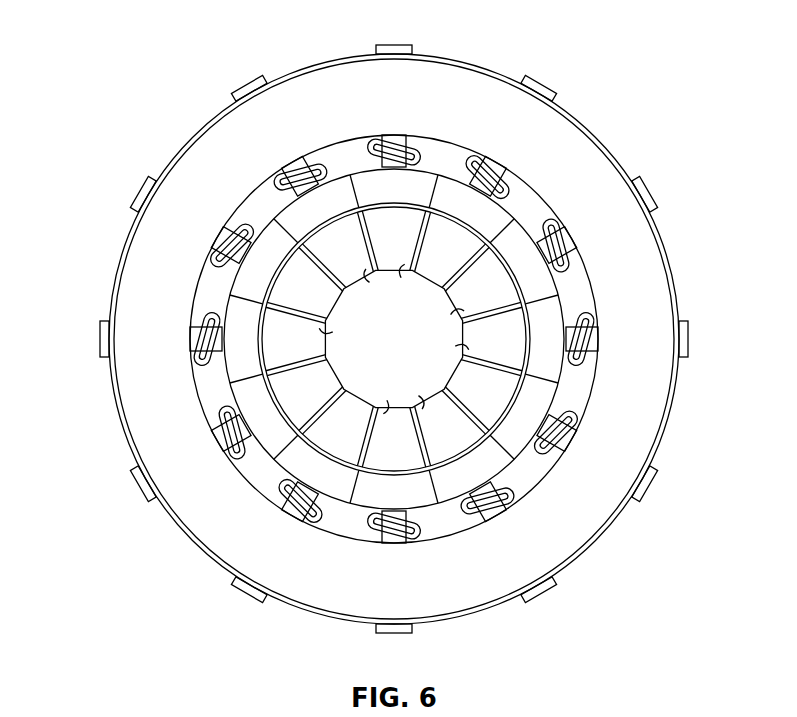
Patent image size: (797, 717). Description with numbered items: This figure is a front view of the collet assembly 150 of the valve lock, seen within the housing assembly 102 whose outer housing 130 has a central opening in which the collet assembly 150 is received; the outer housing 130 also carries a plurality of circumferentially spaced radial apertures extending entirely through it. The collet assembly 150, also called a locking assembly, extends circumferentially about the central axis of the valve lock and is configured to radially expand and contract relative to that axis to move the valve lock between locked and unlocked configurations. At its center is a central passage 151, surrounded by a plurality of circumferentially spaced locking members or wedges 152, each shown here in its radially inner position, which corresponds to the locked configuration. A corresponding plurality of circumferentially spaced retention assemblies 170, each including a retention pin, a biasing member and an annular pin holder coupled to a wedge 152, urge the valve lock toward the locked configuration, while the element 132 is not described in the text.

The collet assembly 150 is at (104, 60).
The housing assembly 102 is at (570, 146).
The outer housing 130 is at (405, 339).
The retention assemblies 170 is at (393, 46).
The clip ring 132 is at (462, 153).
The central passage 151 is at (347, 317).
The wedges 152 is at (396, 270).